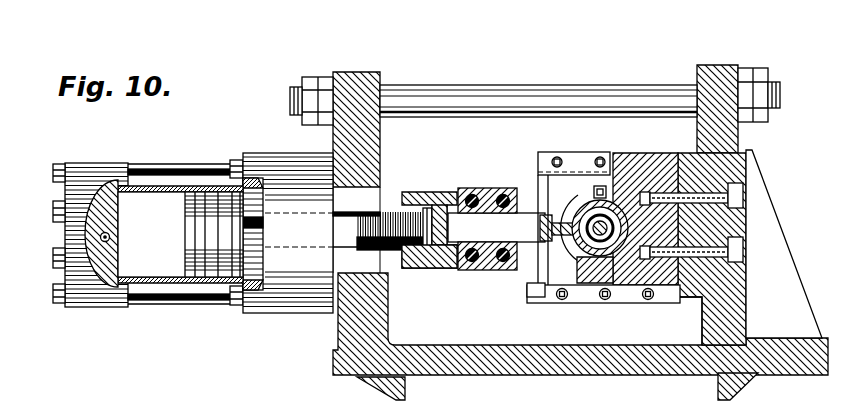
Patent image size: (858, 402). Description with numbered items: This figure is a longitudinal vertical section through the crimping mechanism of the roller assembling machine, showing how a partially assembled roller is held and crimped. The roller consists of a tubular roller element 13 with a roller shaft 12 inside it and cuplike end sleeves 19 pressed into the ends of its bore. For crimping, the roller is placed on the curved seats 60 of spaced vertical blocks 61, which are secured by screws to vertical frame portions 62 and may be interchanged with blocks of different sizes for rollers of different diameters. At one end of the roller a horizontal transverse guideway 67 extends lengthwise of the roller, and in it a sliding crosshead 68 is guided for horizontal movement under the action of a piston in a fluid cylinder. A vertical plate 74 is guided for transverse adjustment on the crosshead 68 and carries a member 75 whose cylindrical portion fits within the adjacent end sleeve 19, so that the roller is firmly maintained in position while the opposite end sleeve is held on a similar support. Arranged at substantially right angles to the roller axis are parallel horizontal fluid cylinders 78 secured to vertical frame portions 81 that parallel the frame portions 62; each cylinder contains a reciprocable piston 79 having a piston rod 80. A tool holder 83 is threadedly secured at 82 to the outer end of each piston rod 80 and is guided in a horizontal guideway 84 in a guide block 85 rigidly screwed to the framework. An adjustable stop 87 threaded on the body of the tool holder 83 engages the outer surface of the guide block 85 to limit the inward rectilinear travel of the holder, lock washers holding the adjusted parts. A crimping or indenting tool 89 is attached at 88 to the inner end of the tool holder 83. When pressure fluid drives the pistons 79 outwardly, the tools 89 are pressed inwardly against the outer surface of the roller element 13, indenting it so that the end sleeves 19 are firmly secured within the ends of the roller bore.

The roller shaft 12 is at (598, 258).
The tubular roller element 13 is at (611, 259).
The end sleeve 19 is at (607, 250).
The curved seat 60 is at (627, 235).
The vertical block 61 is at (667, 160).
The vertical frame portion 62 is at (740, 142).
The horizontal transverse guideway 67 is at (520, 305).
The sliding crosshead 68 is at (630, 160).
The vertical plate 74 is at (566, 185).
The member 75 is at (603, 185).
The horizontal fluid cylinder 78 is at (164, 279).
The reciprocable piston 79 is at (220, 262).
The piston rod 80 is at (360, 211).
The vertical frame portion 81 is at (366, 73).
The threaded connection 82 is at (404, 195).
The tool holder 83 is at (455, 264).
The horizontal guideway 84 is at (492, 190).
The guide block 85 is at (480, 243).
The adjustable stop 87 is at (437, 189).
The attachment point 88 is at (515, 270).
The crimping tool 89 is at (562, 214).